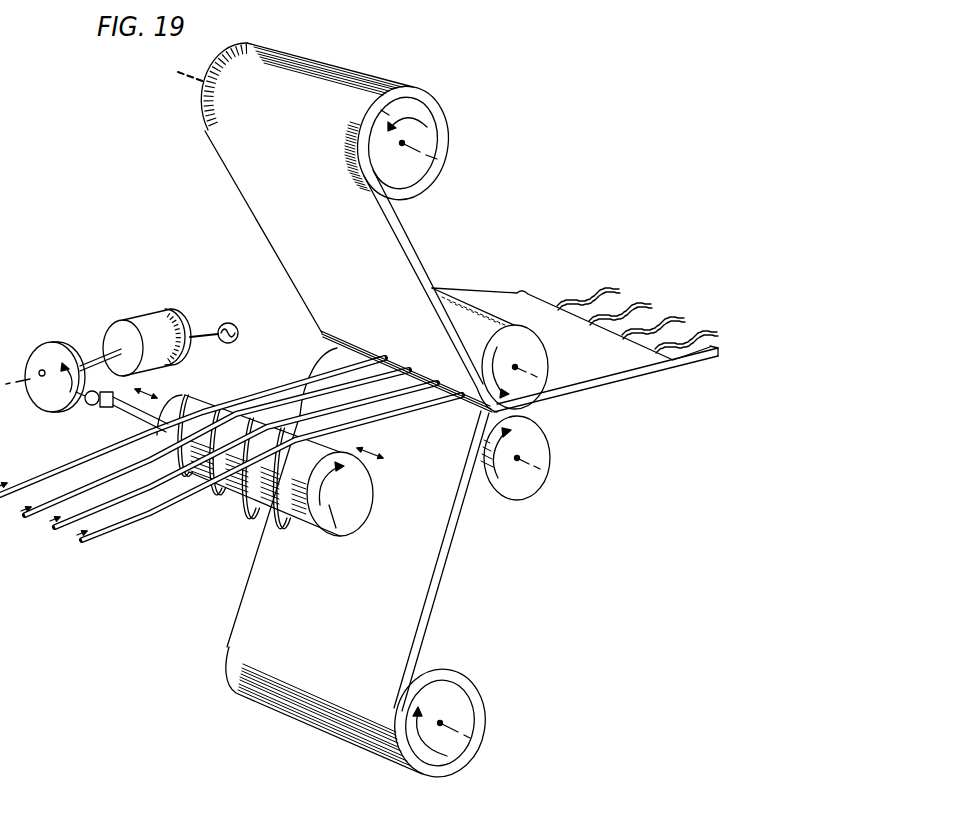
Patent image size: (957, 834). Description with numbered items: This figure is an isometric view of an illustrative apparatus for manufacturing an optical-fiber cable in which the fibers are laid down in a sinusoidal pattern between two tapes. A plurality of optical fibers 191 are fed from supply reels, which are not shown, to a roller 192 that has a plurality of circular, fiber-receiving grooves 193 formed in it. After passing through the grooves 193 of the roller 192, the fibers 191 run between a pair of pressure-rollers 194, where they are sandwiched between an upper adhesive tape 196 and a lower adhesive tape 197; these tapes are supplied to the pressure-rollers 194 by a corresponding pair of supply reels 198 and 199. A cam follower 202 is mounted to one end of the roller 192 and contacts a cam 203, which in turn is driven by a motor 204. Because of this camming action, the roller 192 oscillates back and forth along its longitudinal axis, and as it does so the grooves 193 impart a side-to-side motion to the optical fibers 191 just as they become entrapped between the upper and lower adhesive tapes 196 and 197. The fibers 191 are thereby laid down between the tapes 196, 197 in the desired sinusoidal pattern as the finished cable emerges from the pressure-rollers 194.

The optical fibers 191 is at (79, 493).
The roller 192 is at (340, 517).
The fiber-receiving grooves 193 is at (288, 514).
The pressure-rollers 194 is at (533, 358).
The adhesive tape 196 is at (384, 258).
The adhesive tape 197 is at (421, 592).
The supply reel 198 is at (447, 141).
The supply reel 199 is at (462, 707).
The cam follower 202 is at (89, 405).
The cam 203 is at (44, 350).
The motor 204 is at (147, 322).